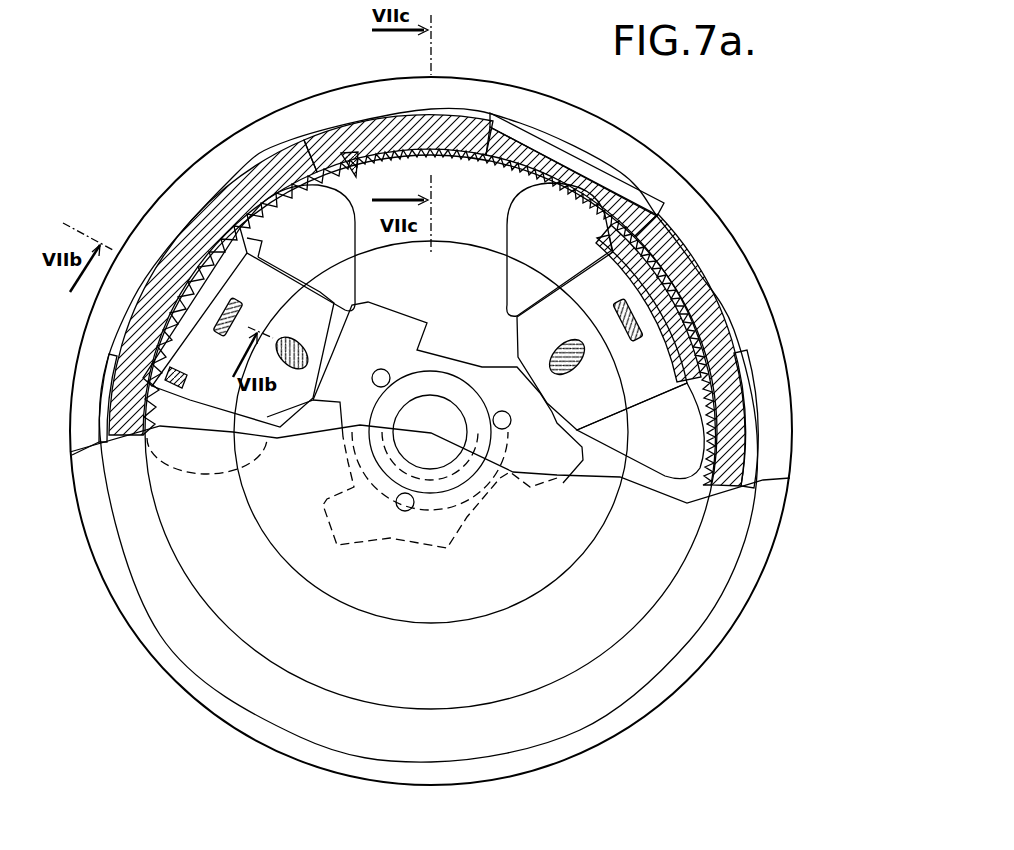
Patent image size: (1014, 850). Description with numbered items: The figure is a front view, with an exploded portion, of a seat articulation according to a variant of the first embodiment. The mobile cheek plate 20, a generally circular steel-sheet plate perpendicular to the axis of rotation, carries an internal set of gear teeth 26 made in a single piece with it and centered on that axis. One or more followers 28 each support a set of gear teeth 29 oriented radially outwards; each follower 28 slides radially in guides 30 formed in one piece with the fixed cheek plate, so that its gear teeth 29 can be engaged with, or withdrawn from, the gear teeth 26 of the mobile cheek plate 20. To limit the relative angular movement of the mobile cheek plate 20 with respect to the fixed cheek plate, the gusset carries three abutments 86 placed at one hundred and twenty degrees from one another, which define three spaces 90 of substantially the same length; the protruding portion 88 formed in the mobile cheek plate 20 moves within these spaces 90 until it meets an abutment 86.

The first cheek plate 20 is at (677, 253).
The set of gear teeth 26 is at (350, 167).
The follower 28 is at (205, 362).
The set of gear teeth 29 is at (203, 330).
The guides 30 is at (762, 370).
The abutments 86 is at (177, 227).
The protruding portion 88 is at (450, 125).
The spaces 90 is at (603, 167).